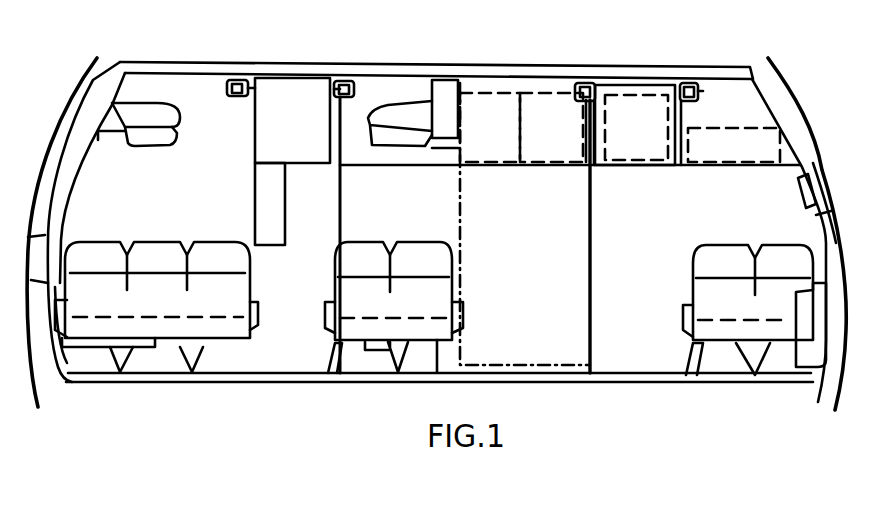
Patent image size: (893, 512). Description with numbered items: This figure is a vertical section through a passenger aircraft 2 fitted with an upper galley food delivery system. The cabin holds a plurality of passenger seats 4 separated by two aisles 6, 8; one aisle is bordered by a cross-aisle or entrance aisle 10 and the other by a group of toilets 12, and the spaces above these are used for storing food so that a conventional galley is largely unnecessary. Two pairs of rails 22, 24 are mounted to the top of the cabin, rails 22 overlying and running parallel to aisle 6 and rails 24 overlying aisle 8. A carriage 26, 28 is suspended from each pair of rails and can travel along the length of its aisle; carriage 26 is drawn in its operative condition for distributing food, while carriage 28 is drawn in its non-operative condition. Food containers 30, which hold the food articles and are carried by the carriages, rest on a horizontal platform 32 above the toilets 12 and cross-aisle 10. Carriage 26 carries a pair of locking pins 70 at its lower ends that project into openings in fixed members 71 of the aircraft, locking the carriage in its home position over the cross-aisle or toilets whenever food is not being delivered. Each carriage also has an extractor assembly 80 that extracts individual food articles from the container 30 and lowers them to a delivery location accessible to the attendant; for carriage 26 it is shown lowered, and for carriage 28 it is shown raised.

The aircraft 2 is at (70, 125).
The passenger seats 4 is at (167, 300).
The aisle 6 is at (300, 342).
The aisle 8 is at (648, 340).
The cross-aisle 10 is at (535, 251).
The group of toilets 12 is at (384, 233).
The rails 22 is at (240, 78).
The rails 24 is at (590, 83).
The carriage 26 is at (308, 150).
The carriage 28 is at (645, 167).
The food containers 30 is at (488, 90).
The horizontal platform 32 is at (427, 167).
The locking pins 70 is at (595, 168).
The fixed members 71 is at (582, 157).
The extractor assembly 80 is at (255, 187).